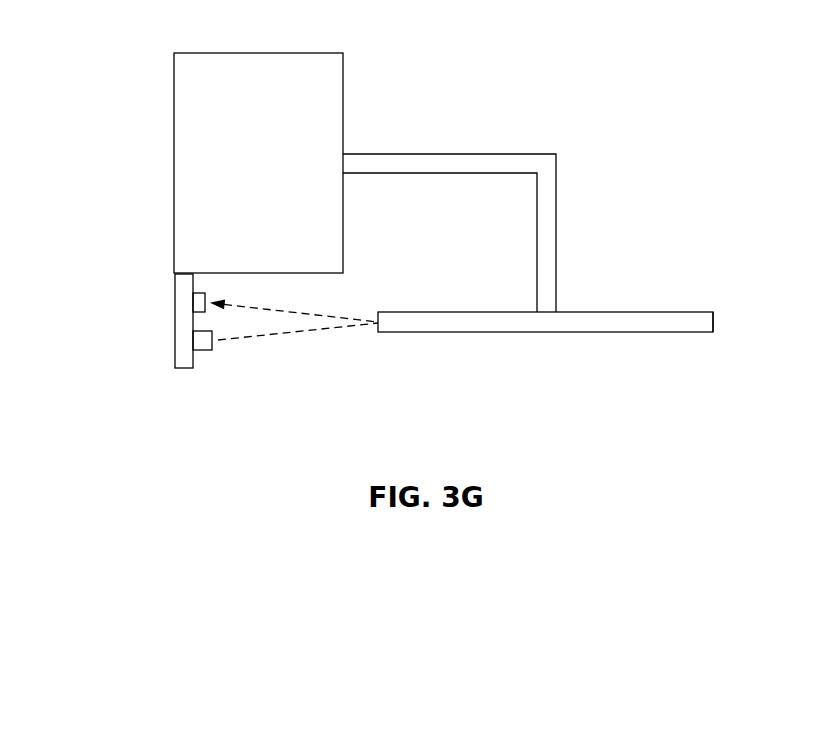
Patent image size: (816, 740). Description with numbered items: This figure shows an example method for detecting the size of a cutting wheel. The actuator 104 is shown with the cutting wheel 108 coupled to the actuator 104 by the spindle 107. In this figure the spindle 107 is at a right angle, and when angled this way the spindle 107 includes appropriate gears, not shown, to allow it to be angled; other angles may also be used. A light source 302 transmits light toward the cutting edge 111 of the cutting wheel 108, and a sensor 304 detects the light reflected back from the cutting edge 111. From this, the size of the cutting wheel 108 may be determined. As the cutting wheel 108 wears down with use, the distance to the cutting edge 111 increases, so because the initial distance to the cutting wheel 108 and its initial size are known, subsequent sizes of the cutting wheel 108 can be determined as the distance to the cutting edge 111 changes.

The actuator 104 is at (240, 188).
The spindle 107 is at (488, 127).
The cutting wheel 108 is at (647, 282).
The cutting edge 111 is at (722, 364).
The sensor 304 is at (178, 303).
The light source 302 is at (224, 374).